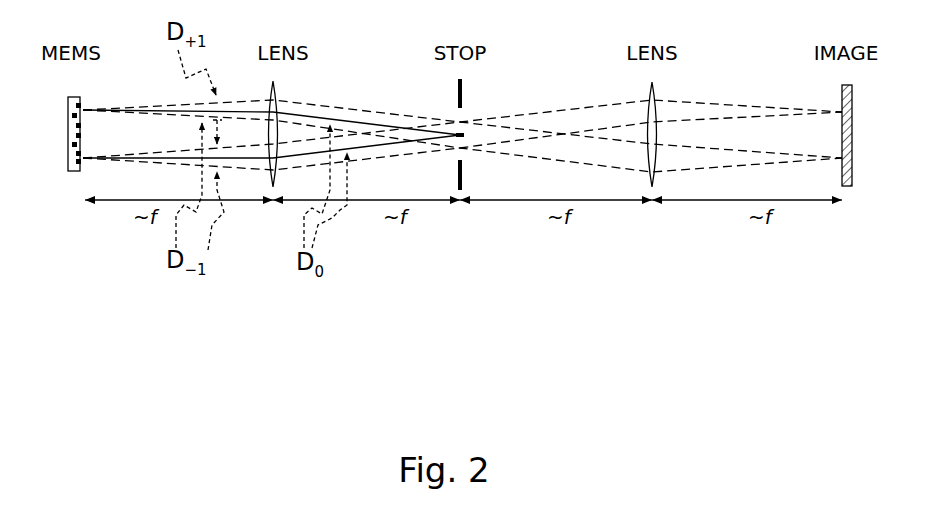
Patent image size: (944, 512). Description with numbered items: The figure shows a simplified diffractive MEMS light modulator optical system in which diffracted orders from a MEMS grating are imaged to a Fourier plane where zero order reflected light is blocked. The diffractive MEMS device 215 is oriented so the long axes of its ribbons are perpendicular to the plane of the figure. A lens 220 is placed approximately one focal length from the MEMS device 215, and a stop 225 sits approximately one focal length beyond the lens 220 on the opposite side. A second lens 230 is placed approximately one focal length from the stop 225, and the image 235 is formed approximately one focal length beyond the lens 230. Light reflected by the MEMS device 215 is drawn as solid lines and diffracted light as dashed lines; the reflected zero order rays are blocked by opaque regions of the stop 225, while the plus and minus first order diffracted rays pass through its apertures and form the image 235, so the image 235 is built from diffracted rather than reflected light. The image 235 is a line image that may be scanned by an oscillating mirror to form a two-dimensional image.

The diffractive MEMS device 215 is at (67, 156).
The lens 220 is at (278, 96).
The stop 225 is at (467, 91).
The lens 230 is at (657, 96).
The image 235 is at (856, 103).